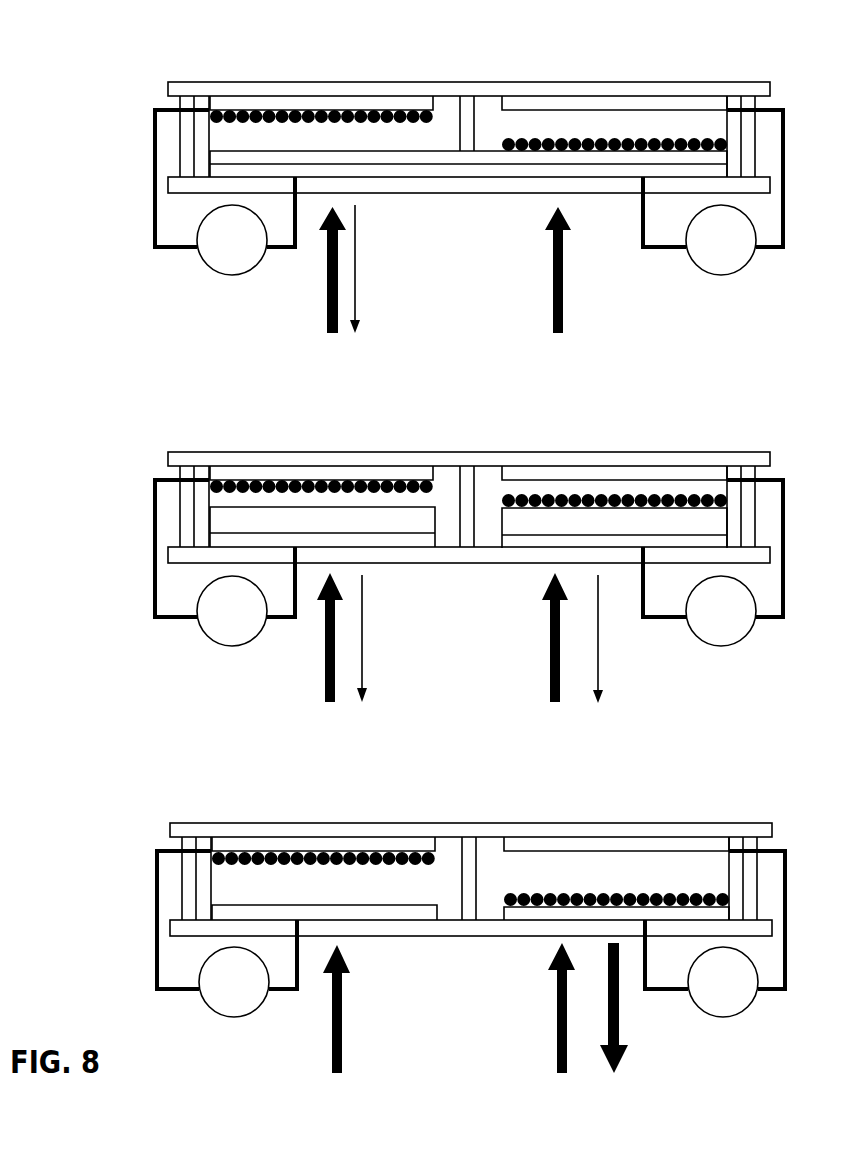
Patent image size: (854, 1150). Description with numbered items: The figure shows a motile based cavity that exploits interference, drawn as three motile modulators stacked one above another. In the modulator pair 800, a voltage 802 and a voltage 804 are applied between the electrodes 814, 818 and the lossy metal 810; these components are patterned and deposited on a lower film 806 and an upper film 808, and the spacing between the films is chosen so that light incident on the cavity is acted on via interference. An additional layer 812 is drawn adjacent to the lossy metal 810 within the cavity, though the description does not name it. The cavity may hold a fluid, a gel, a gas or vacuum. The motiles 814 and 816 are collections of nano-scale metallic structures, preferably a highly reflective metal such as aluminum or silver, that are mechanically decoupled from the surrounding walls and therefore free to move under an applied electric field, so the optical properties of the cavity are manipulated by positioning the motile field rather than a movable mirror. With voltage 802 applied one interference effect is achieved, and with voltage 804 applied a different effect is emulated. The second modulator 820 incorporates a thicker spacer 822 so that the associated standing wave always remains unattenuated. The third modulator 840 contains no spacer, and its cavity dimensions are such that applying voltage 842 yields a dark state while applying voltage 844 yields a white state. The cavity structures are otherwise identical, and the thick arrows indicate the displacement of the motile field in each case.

The modulator pair 800 is at (447, 185).
The voltage 802 is at (230, 275).
The voltage 804 is at (737, 273).
The film 806 is at (168, 192).
The film 808 is at (167, 83).
The lossy metal 810 is at (453, 165).
The upper layer 812 is at (333, 150).
The electrode 814 is at (260, 95).
The motiles 816 is at (560, 138).
The electrode 818 is at (595, 95).
The motile modulator 820 is at (469, 556).
The thicker spacer 822 is at (233, 520).
The motile modulator 840 is at (478, 958).
The voltage 842 is at (226, 1015).
The voltage 844 is at (728, 1015).